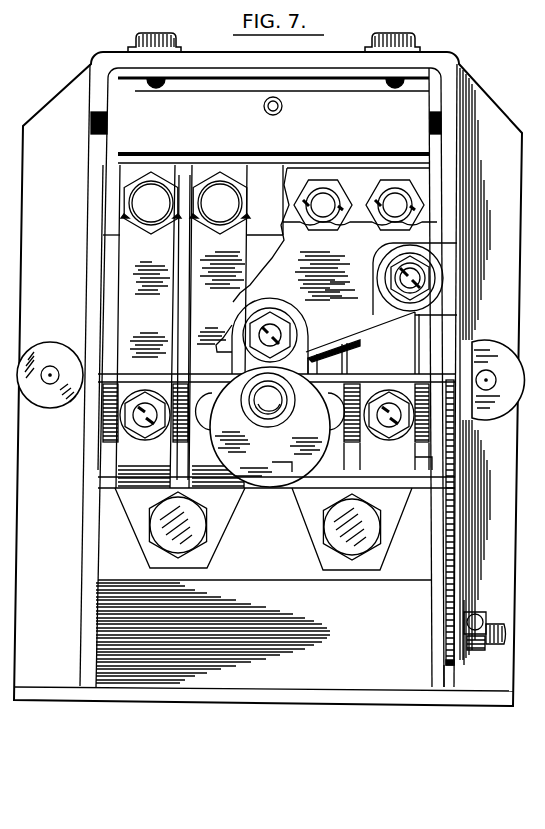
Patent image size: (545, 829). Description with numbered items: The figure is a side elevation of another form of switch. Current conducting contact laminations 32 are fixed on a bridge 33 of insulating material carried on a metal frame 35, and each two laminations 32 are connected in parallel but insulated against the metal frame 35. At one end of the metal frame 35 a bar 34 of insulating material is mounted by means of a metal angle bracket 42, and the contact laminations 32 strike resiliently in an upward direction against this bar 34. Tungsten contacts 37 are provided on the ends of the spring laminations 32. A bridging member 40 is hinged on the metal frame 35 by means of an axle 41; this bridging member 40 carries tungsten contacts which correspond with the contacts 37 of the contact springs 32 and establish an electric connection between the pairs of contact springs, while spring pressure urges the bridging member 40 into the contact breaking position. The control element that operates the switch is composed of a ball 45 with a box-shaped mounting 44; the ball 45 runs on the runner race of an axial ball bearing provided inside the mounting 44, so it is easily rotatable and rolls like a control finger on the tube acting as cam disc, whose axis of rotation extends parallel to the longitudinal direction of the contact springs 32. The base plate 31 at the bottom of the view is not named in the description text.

The base plate 31 is at (83, 603).
The contact laminations 32 is at (127, 303).
The bridge 33 is at (107, 420).
The bar 34 is at (117, 155).
The metal frame 35 is at (337, 64).
The tungsten contacts 37 is at (220, 190).
The bridging member 40 is at (457, 660).
The axle 41 is at (492, 651).
The metal angle bracket 42 is at (212, 92).
The box-shaped mounting 44 is at (246, 492).
The ball 45 is at (269, 408).